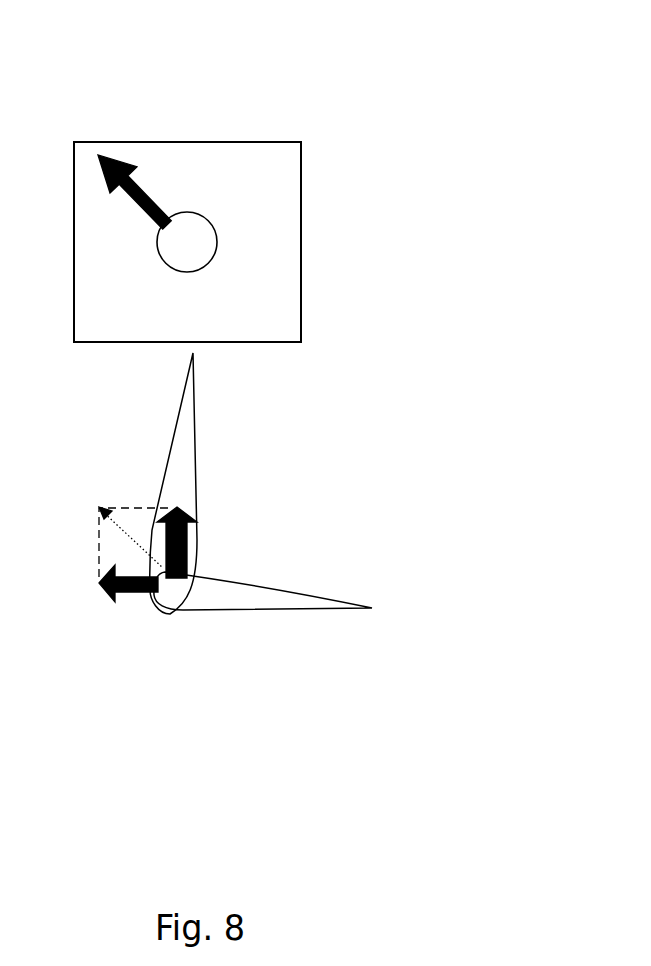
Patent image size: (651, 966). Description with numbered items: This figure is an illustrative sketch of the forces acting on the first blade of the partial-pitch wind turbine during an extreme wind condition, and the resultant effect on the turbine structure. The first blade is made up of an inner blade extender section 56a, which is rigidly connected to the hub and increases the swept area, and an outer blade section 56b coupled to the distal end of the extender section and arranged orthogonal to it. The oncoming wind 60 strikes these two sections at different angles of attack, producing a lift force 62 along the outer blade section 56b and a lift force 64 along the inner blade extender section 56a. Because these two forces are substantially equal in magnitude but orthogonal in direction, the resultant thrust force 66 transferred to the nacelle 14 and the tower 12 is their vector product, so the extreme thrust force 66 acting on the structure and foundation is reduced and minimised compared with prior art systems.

The tower 12 is at (205, 225).
The nacelle 14 is at (301, 270).
The inner blade extender section 56a is at (292, 585).
The outer blade section 56b is at (182, 460).
The oncoming wind 60 is at (249, 660).
The lift force 62 is at (124, 592).
The lift force 64 is at (187, 537).
The resultant thrust force 66 is at (113, 158).